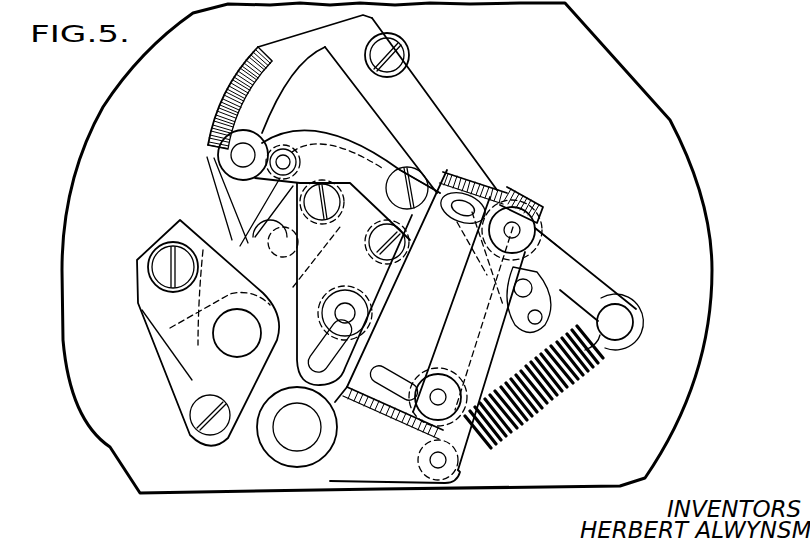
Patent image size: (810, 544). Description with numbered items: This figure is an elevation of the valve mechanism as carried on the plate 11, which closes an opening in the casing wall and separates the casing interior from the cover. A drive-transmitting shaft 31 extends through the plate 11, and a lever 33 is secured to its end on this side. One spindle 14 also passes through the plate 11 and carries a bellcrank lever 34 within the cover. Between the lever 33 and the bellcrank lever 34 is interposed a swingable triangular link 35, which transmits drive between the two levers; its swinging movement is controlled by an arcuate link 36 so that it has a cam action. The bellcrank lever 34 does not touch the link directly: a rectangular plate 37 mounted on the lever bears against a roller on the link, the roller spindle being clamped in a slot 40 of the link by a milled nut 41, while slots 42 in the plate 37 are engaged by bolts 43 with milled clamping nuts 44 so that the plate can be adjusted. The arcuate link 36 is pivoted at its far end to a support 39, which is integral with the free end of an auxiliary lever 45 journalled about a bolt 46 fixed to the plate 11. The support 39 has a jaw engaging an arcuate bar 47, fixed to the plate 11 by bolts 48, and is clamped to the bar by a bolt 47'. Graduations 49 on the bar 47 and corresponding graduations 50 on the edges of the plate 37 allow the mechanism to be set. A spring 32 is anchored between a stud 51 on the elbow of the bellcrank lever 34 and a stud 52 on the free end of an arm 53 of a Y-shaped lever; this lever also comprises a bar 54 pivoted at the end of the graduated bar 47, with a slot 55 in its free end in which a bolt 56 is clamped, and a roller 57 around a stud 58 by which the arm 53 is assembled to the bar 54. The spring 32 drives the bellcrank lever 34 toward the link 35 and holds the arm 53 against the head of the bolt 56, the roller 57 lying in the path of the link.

The plate 11 is at (597, 47).
The spindle 14 is at (292, 443).
The drive-transmitting shaft 31 is at (230, 350).
The spring 32 is at (568, 392).
The lever 33 is at (237, 268).
The bellcrank lever 34 is at (385, 465).
The swingable triangular link 35 is at (296, 362).
The arcuate link 36 is at (352, 143).
The rectangular plate 37 is at (448, 292).
The support 39 is at (267, 148).
The slot 40 is at (327, 347).
The milled nut 41 is at (360, 317).
The slots 42 is at (380, 370).
The bolts 43 is at (518, 232).
The milled clamping nuts 44 is at (540, 232).
The auxiliary lever 45 is at (402, 157).
The bolt 46 is at (444, 165).
The arcuate bar 47 is at (217, 98).
The bolt 47' is at (212, 155).
The bolts 48 is at (408, 43).
The graduations 49 is at (283, 78).
The graduations 50 is at (468, 173).
The stud 51 is at (436, 464).
The stud 52 is at (615, 322).
The arm 53 is at (598, 287).
The bar 54 is at (425, 77).
The slot 55 is at (593, 357).
The bolt 56 is at (542, 283).
The roller 57 is at (505, 180).
The stud 58 is at (540, 229).